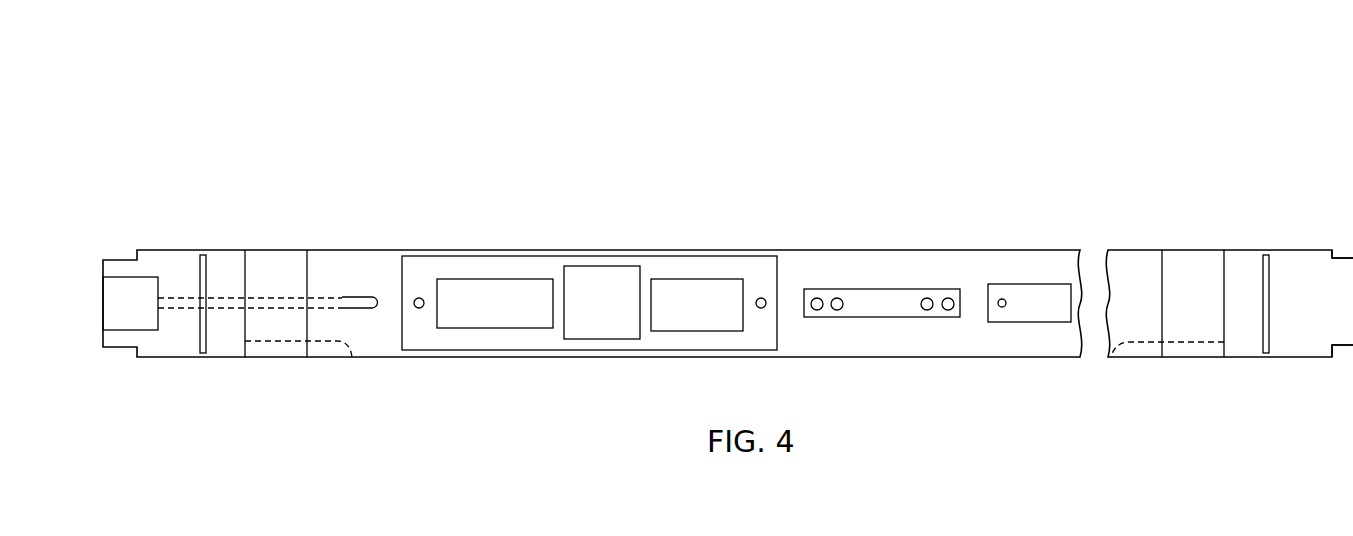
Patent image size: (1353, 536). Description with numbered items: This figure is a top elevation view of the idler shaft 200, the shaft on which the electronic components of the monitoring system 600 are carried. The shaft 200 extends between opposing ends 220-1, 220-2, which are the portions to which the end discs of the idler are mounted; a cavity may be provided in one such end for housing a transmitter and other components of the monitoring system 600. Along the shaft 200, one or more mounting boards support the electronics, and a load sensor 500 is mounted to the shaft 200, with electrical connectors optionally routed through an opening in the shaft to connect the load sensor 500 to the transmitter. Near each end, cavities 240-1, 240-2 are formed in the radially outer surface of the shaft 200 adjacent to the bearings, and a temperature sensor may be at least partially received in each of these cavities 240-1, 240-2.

The shaft 200 is at (148, 88).
The monitoring system 600 is at (383, 142).
The first end of the shaft 220-1 is at (1348, 258).
The second end of the shaft 220-2 is at (120, 252).
The first cavity 240-1 is at (1111, 357).
The second cavity 240-2 is at (352, 357).
The load sensor 500 is at (893, 285).